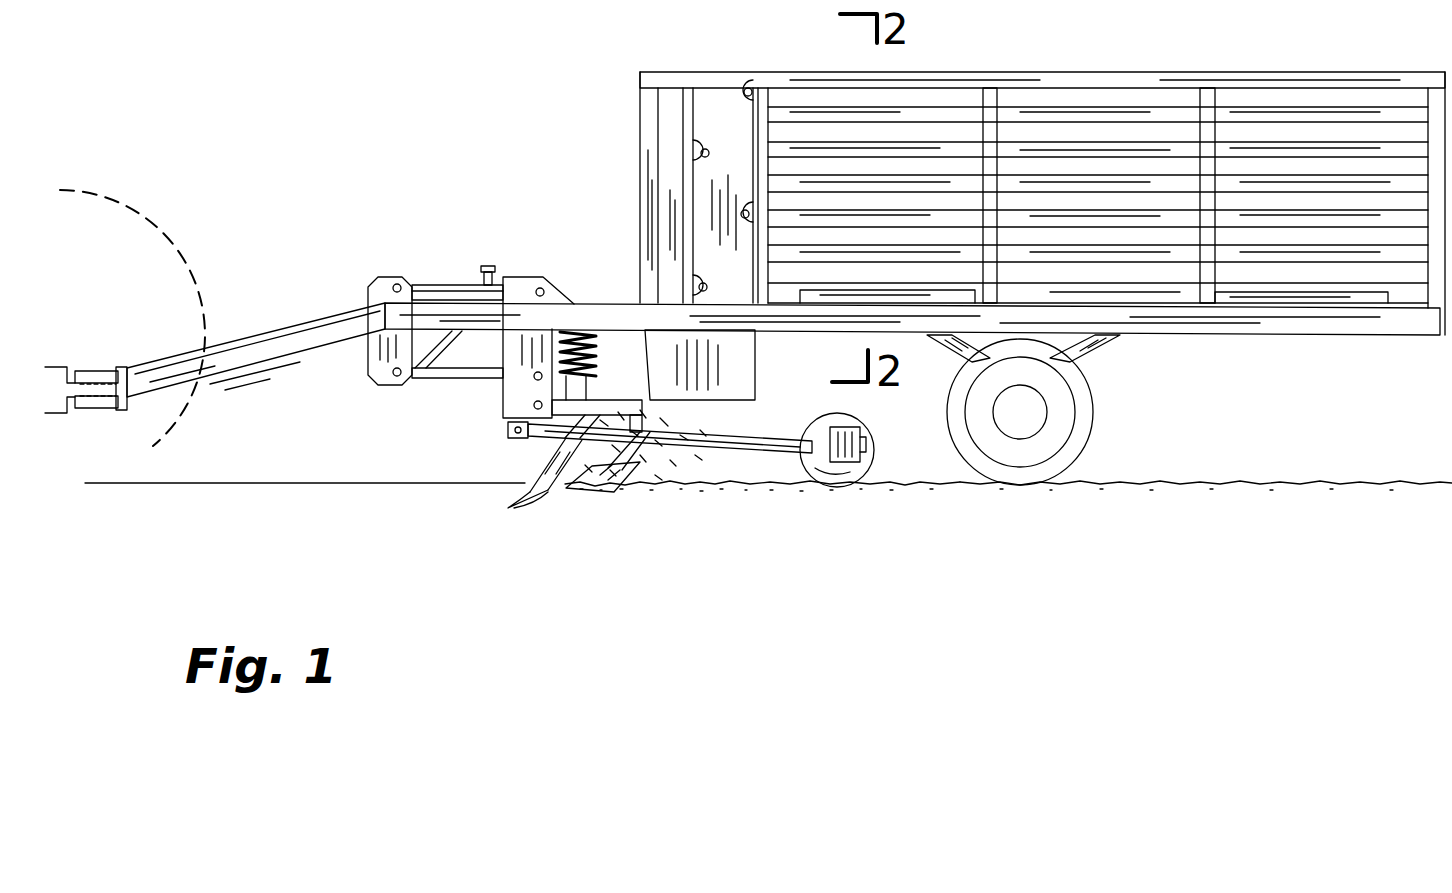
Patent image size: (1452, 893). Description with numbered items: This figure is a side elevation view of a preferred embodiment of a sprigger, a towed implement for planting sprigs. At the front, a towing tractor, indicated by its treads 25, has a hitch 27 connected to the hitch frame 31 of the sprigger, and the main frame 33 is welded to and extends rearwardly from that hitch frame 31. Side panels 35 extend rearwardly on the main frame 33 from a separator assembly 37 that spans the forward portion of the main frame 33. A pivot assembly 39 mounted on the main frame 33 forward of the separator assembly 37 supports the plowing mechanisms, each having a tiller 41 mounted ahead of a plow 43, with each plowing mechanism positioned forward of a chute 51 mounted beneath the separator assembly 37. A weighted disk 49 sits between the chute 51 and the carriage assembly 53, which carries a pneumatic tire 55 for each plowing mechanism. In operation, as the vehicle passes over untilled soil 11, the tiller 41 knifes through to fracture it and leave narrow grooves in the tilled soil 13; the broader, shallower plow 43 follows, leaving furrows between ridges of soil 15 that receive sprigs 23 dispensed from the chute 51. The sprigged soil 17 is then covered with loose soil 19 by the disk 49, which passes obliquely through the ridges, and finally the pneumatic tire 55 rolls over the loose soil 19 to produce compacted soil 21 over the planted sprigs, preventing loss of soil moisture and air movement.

The untilled soil 11 is at (300, 488).
The tilled soil 13 is at (553, 492).
The ridges of soil 15 is at (660, 488).
The sprigged soil 17 is at (760, 486).
The loose soil 19 is at (912, 486).
The compacted soil 21 is at (1245, 486).
The sprigs 23 is at (705, 424).
The treads 25 is at (95, 193).
The hitch 27 is at (65, 366).
The hitch frame 31 is at (275, 345).
The main frame 33 is at (1347, 321).
The side panels 35 is at (1055, 75).
The separator assembly 37 is at (720, 90).
The pivot assembly 39 is at (440, 290).
The tiller 41 is at (520, 505).
The plow 43 is at (600, 492).
The weighted disk 49 is at (847, 489).
The chute 51 is at (740, 355).
The carriage assembly 53 is at (1025, 405).
The pneumatic tire 55 is at (1090, 462).